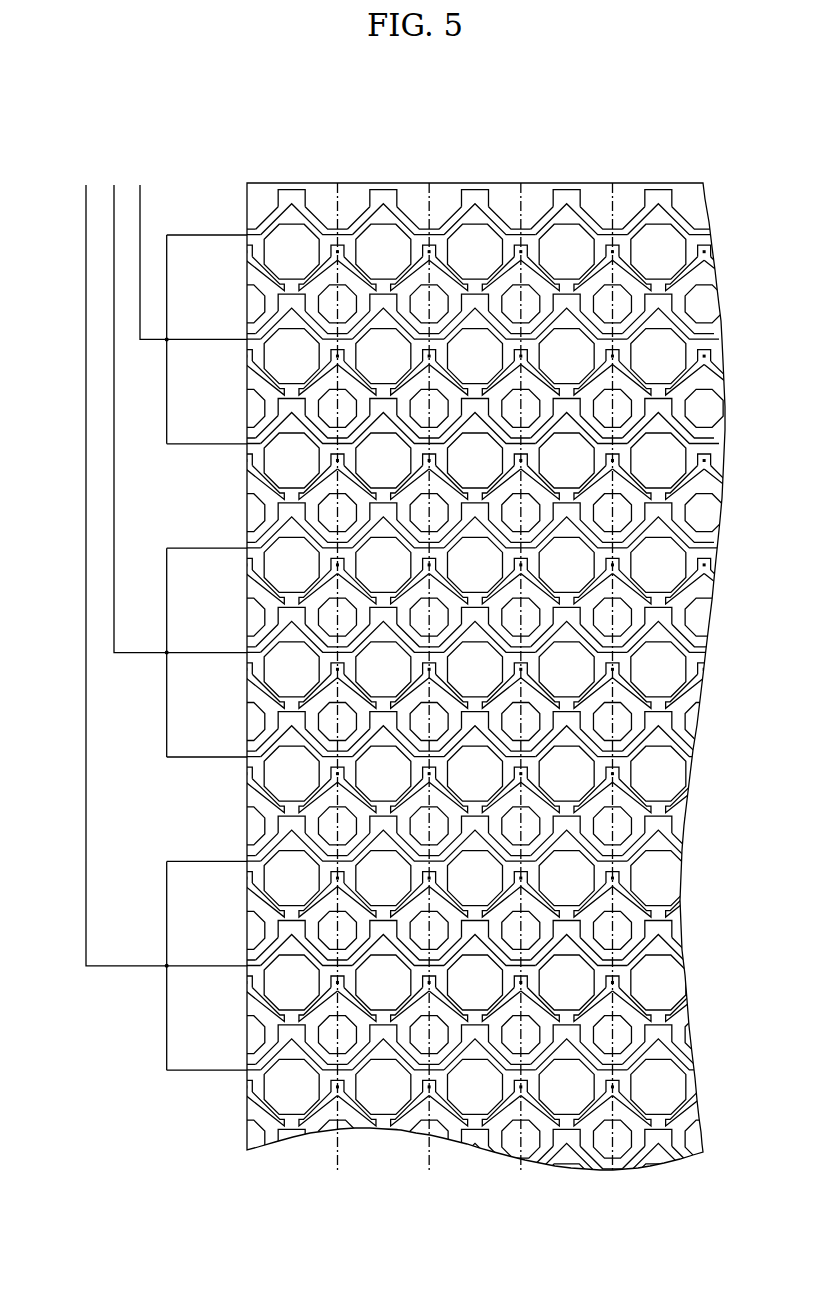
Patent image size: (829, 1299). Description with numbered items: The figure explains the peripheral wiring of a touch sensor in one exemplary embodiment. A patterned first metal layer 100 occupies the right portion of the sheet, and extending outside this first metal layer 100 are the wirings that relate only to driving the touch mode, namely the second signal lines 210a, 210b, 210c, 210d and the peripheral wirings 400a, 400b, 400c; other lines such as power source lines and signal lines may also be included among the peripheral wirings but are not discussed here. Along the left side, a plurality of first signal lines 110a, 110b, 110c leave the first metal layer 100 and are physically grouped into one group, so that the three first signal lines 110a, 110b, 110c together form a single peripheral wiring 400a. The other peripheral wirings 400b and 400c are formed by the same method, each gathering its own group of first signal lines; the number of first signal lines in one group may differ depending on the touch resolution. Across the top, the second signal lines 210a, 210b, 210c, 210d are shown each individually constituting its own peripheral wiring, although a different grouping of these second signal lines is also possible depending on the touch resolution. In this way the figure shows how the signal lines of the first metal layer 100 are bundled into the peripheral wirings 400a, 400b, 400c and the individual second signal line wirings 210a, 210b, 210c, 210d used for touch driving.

The first metal layer 100 is at (686, 190).
The first signal line 110a is at (195, 234).
The first signal line 110b is at (195, 338).
The first signal line 110c is at (195, 443).
The second signal line 210a is at (338, 183).
The second signal line 210b is at (429, 183).
The second signal line 210c is at (521, 183).
The second signal line 210d is at (612, 183).
The peripheral wiring 400a is at (140, 185).
The peripheral wiring 400b is at (114, 185).
The peripheral wiring 400c is at (86, 185).